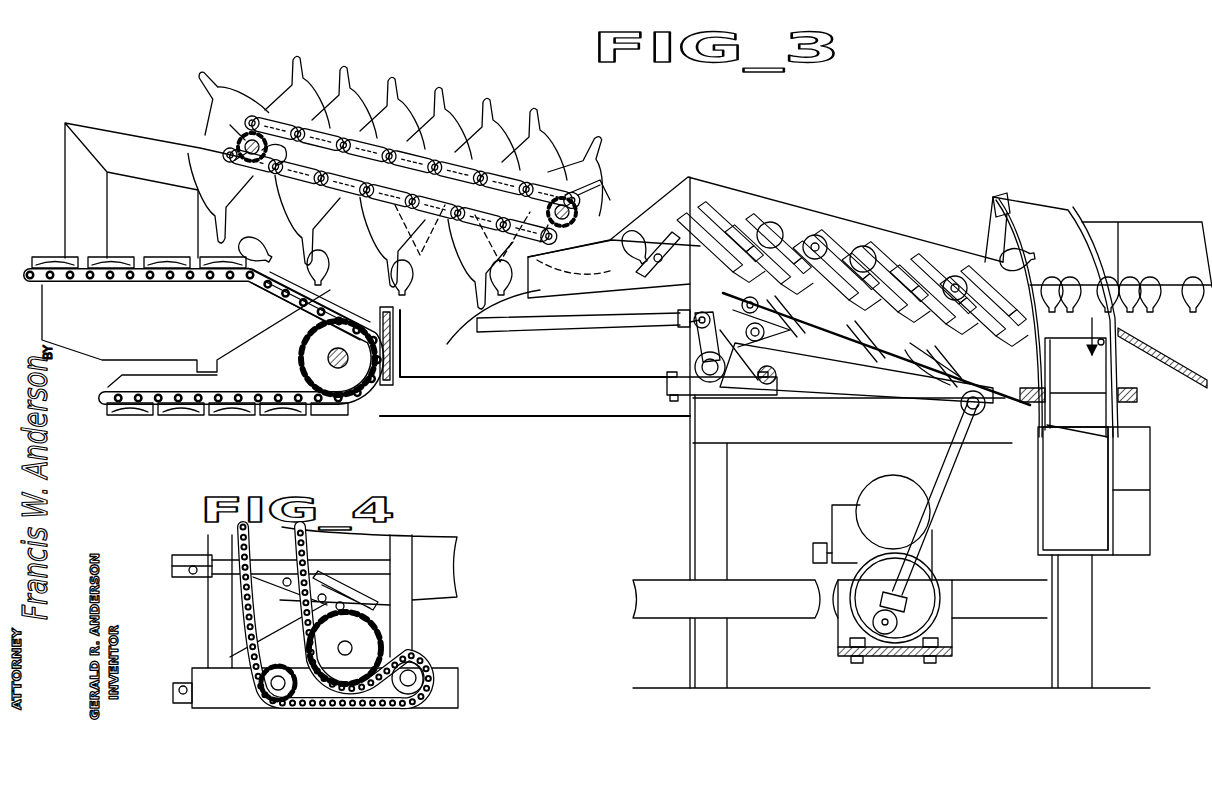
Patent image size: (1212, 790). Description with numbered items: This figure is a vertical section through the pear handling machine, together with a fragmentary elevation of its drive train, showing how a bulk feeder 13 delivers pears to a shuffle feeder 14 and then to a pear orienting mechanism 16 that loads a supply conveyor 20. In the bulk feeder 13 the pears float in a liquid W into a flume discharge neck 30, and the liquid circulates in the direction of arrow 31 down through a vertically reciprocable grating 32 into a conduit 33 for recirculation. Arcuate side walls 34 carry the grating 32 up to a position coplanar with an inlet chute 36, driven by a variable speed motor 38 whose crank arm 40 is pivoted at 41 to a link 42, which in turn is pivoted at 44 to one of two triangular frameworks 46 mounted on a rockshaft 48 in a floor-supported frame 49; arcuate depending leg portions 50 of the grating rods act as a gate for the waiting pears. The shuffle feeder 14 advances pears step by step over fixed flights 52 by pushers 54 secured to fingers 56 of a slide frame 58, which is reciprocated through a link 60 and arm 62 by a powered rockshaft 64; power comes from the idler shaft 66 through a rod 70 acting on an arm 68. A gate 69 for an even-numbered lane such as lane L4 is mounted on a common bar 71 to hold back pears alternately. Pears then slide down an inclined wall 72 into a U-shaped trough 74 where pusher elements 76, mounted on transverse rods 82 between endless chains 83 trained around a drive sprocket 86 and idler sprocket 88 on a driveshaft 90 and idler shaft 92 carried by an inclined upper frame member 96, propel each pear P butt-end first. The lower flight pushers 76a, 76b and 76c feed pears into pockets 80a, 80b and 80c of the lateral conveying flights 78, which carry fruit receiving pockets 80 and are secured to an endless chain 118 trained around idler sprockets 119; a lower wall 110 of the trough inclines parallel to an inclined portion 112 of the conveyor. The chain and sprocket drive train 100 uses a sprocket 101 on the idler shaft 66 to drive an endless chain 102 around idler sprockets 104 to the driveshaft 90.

In FIG. 3, the bulk feeder 13 is at (1192, 222).
In FIG. 3, the shuffle feeder 14 is at (779, 404).
In FIG. 3, the pear orienting mechanism 16 is at (392, 170).
In FIG. 3, the supply conveyor 20 is at (46, 256).
In FIG. 4, the supply conveyor 20 is at (186, 553).
In FIG. 3, the flume discharge neck 30 is at (1122, 240).
In FIG. 3, the arrow indicating liquid flow direction 31 is at (1122, 338).
In FIG. 3, the vertically reciprocable grating 32 is at (1078, 377).
In FIG. 3, the conduit 33 is at (1060, 528).
In FIG. 3, the arcuate side walls 34 is at (1023, 238).
In FIG. 3, the inlet chute 36 is at (1103, 263).
In FIG. 3, the variable speed motor 38 is at (935, 532).
In FIG. 3, the crank arm 40 is at (910, 590).
In FIG. 3, the pivot 41 is at (878, 622).
In FIG. 3, the link 42 is at (950, 460).
In FIG. 3, the pivot 44 is at (960, 410).
In FIG. 3, the triangular frameworks 46 is at (985, 230).
In FIG. 3, the rockshaft 48 is at (770, 395).
In FIG. 3, the floor-supported frame 49 is at (688, 495).
In FIG. 4, the floor-supported frame 49 is at (455, 695).
In FIG. 3, the arcuate depending leg portions 50 is at (1100, 400).
In FIG. 3, the fixed flights 52 is at (700, 235).
In FIG. 3, the movable flights or pushers 54 is at (735, 240).
In FIG. 3, the upwardly projecting fingers 56 is at (895, 340).
In FIG. 3, the slide frame 58 is at (900, 365).
In FIG. 3, the link 60 is at (742, 333).
In FIG. 3, the arm 62 is at (792, 380).
In FIG. 3, the powered rockshaft 64 is at (722, 402).
In FIG. 3, the idler shaft 66 is at (348, 365).
In FIG. 4, the idler shaft 66 is at (352, 650).
In FIG. 3, the arm 68 is at (693, 340).
In FIG. 3, the gate 69 is at (630, 188).
In FIG. 3, the rod 70 is at (520, 332).
In FIG. 3, the common bar 71 is at (648, 300).
In FIG. 3, the inclined wall 72 is at (658, 261).
In FIG. 3, the U-shaped trough 74 is at (576, 295).
In FIG. 3, the pusher elements 76 is at (512, 80).
In FIG. 3, the pusher element 76a is at (300, 292).
In FIG. 3, the pusher element 76b is at (420, 292).
In FIG. 3, the pusher element 76c is at (525, 268).
In FIG. 3, the lateral conveying flights 78 is at (163, 266).
In FIG. 3, the fruit receiving pockets 80 is at (63, 283).
In FIG. 3, the fruit pocket 80a is at (350, 315).
In FIG. 3, the fruit pocket 80b is at (335, 412).
In FIG. 3, the fruit pocket 80c is at (203, 416).
In FIG. 3, the transverse rods 82 is at (470, 177).
In FIG. 3, the endless chains 83 is at (389, 196).
In FIG. 3, the drive sprocket 86 is at (286, 157).
In FIG. 3, the idler sprocket 88 is at (540, 205).
In FIG. 3, the driveshaft 90 is at (225, 133).
In FIG. 3, the idler shaft 92 is at (585, 198).
In FIG. 3, the inclined upper frame member 96 is at (104, 133).
In FIG. 4, the chain and sprocket drive train 100 is at (440, 668).
In FIG. 4, the sprocket 101 is at (380, 635).
In FIG. 4, the endless chain 102 is at (245, 603).
In FIG. 4, the idler sprockets 104 is at (395, 705).
In FIG. 3, the lower wall 110 is at (305, 300).
In FIG. 3, the inclined portion 112 is at (275, 320).
In FIG. 3, the endless chain 118 is at (187, 285).
In FIG. 3, the idler sprockets 119 is at (298, 360).
In FIG. 3, the pear P is at (1116, 265).
In FIG. 3, the liquid W is at (1176, 285).
In FIG. 3, the lane L4 is at (880, 255).